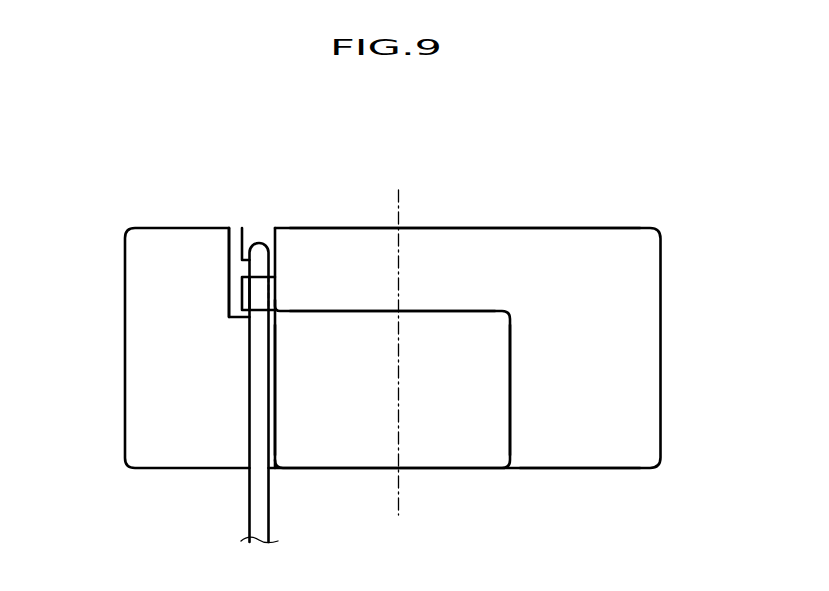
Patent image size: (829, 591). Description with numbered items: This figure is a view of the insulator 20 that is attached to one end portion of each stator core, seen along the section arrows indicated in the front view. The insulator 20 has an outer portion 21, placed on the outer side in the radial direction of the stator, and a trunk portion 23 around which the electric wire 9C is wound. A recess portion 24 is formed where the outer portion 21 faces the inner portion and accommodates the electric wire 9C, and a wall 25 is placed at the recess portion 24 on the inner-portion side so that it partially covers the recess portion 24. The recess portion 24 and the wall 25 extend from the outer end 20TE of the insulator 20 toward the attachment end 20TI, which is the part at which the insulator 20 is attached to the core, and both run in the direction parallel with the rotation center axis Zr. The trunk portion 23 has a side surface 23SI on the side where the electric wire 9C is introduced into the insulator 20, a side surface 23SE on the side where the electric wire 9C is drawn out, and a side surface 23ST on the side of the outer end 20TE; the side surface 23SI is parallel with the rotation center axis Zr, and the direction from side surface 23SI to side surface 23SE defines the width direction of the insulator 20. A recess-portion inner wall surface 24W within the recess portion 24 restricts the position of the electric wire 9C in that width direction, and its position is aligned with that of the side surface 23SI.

The insulator 20 is at (127, 141).
The outer portion 21 is at (638, 293).
The trunk portion 23 is at (457, 447).
The recess portion 24 is at (237, 228).
The recess-portion inner wall surface 24W is at (256, 294).
The wall 25 is at (258, 296).
The electric wire 9C is at (258, 513).
The outer end 20TE is at (599, 217).
The attachment end 20TI is at (596, 481).
The side surface 23ST is at (452, 299).
The side surface 23SE is at (522, 364).
The side surface 23SI is at (262, 363).
The rotation center axis Zr is at (400, 339).